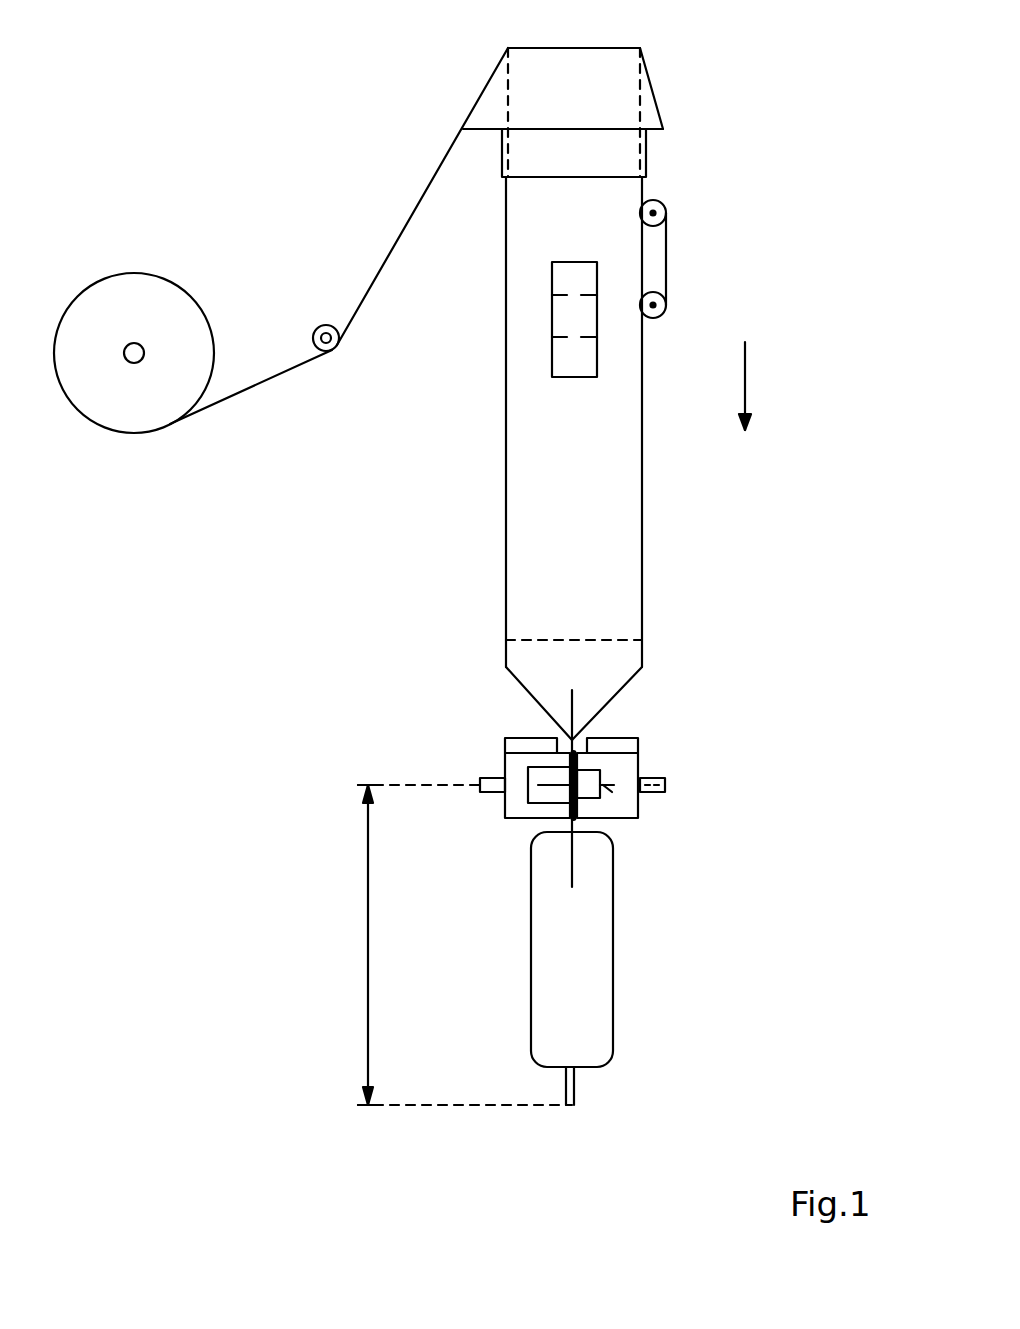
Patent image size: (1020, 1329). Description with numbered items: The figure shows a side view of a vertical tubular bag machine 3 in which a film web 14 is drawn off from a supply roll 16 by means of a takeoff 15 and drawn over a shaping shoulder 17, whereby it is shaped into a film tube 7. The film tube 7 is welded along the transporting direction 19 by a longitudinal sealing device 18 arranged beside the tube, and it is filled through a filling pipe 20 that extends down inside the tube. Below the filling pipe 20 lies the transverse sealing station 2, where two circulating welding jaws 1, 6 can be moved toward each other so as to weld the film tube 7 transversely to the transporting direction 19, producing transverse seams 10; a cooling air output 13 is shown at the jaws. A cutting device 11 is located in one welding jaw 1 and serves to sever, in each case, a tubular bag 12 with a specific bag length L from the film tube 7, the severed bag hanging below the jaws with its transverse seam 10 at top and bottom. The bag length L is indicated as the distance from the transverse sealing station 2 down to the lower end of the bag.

The welding jaw 1 is at (627, 763).
The transverse sealing station 2 is at (722, 767).
The tubular bag machine 3 is at (738, 80).
The oppositely running welding jaw 6 is at (480, 765).
The film tube 7 is at (617, 658).
The transverse seam 10 is at (577, 803).
The cutting device 11 is at (607, 787).
The tubular bag 12 is at (595, 992).
The cooling air output 13 is at (523, 737).
The film web 14 is at (418, 205).
The takeoff 15 is at (572, 318).
The supply roll 16 is at (117, 308).
The shaping shoulder 17 is at (498, 98).
The longitudinal sealing device 18 is at (673, 247).
The transporting direction 19 is at (745, 380).
The filling pipe 20 is at (527, 657).
The bag length L is at (366, 945).